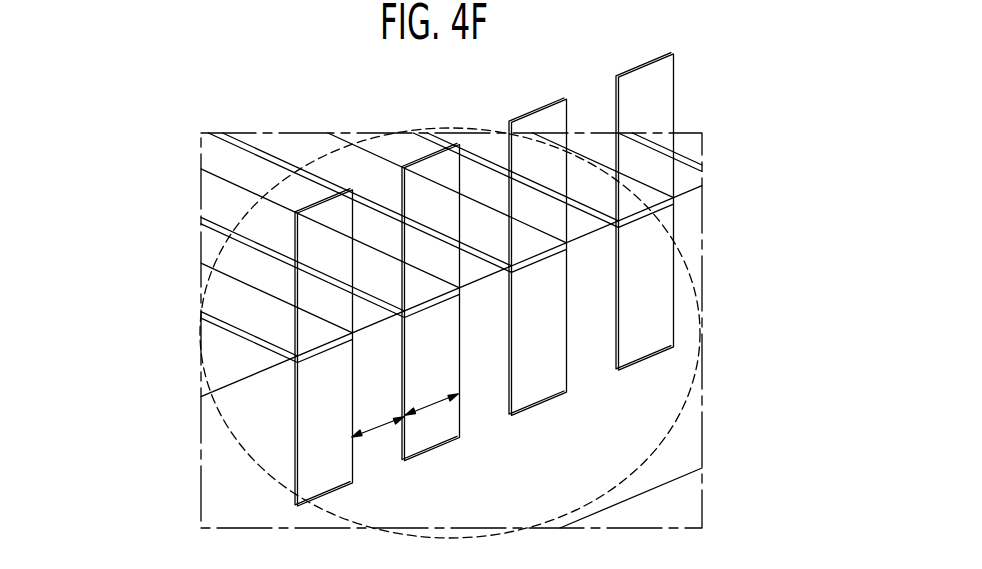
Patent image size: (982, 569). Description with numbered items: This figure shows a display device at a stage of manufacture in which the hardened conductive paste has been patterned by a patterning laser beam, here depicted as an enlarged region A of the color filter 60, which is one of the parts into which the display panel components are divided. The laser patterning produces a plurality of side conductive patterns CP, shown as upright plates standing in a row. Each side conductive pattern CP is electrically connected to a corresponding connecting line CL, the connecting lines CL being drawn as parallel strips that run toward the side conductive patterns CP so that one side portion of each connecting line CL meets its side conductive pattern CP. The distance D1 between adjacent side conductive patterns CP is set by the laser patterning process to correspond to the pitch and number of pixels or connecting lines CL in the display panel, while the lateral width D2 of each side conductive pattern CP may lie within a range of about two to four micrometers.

The color filter 60 is at (667, 400).
The enlarged region A is at (685, 258).
The connecting line CL is at (218, 300).
The side conductive pattern CP is at (295, 449).
The distance between the side conductive patterns D1 is at (378, 439).
The lateral width of each side conductive pattern D2 is at (432, 418).